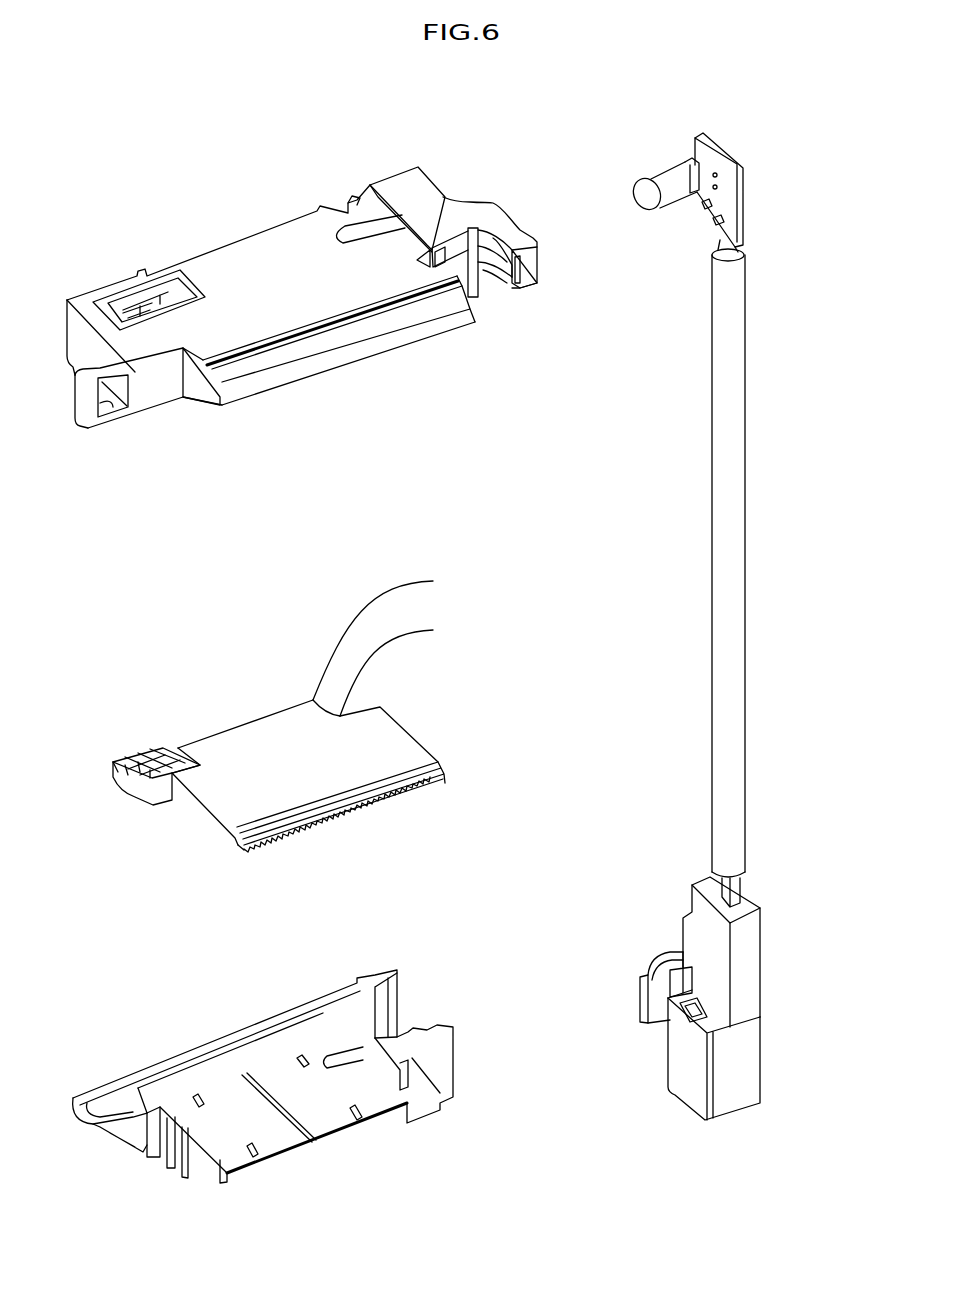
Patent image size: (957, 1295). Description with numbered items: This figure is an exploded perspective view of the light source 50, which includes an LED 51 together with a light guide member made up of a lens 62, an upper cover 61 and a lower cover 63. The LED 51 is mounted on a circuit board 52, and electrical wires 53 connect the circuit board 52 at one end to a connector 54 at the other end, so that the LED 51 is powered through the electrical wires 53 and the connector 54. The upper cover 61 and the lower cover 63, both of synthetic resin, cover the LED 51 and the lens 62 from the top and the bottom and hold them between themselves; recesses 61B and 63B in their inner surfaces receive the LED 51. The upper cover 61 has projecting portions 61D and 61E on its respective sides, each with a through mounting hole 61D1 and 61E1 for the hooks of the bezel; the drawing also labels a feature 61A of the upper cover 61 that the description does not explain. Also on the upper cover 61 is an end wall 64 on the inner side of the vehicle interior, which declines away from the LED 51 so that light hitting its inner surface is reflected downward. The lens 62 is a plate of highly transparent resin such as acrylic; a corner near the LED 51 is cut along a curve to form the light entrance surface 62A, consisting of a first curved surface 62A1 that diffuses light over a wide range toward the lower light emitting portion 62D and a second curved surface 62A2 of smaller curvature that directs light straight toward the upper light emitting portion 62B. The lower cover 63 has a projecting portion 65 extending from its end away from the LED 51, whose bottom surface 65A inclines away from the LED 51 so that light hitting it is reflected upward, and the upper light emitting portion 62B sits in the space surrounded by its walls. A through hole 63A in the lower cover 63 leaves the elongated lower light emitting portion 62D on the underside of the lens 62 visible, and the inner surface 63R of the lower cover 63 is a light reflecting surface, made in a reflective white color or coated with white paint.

The upper cover 61 is at (294, 176).
The opening of housing 61A is at (163, 290).
The recess 61B is at (372, 220).
The projecting portion 61D is at (100, 368).
The mounting hole 61D1 is at (105, 403).
The projecting portion 61E is at (520, 232).
The mounting hole 61E1 is at (500, 278).
The end wall 64 is at (320, 336).
The lens 62 is at (456, 725).
The light entrance surface 62A is at (430, 644).
The first curved surface 62A1 is at (443, 669).
The second curved surface 62A2 is at (430, 636).
The upper light emitting portion 62B is at (140, 752).
The lower light emitting portion 62D is at (420, 790).
The lower cover 63 is at (466, 1056).
The through hole 63A is at (245, 1160).
The recess 63B is at (350, 1053).
The inner surface 63R is at (180, 1115).
The projecting portion 65 is at (80, 1097).
The bottom surface 65A is at (110, 1107).
The light source 50 is at (692, 1130).
The LED 51 is at (670, 178).
The circuit board 52 is at (730, 200).
The electrical wires 53 is at (735, 317).
The connector 54 is at (752, 952).